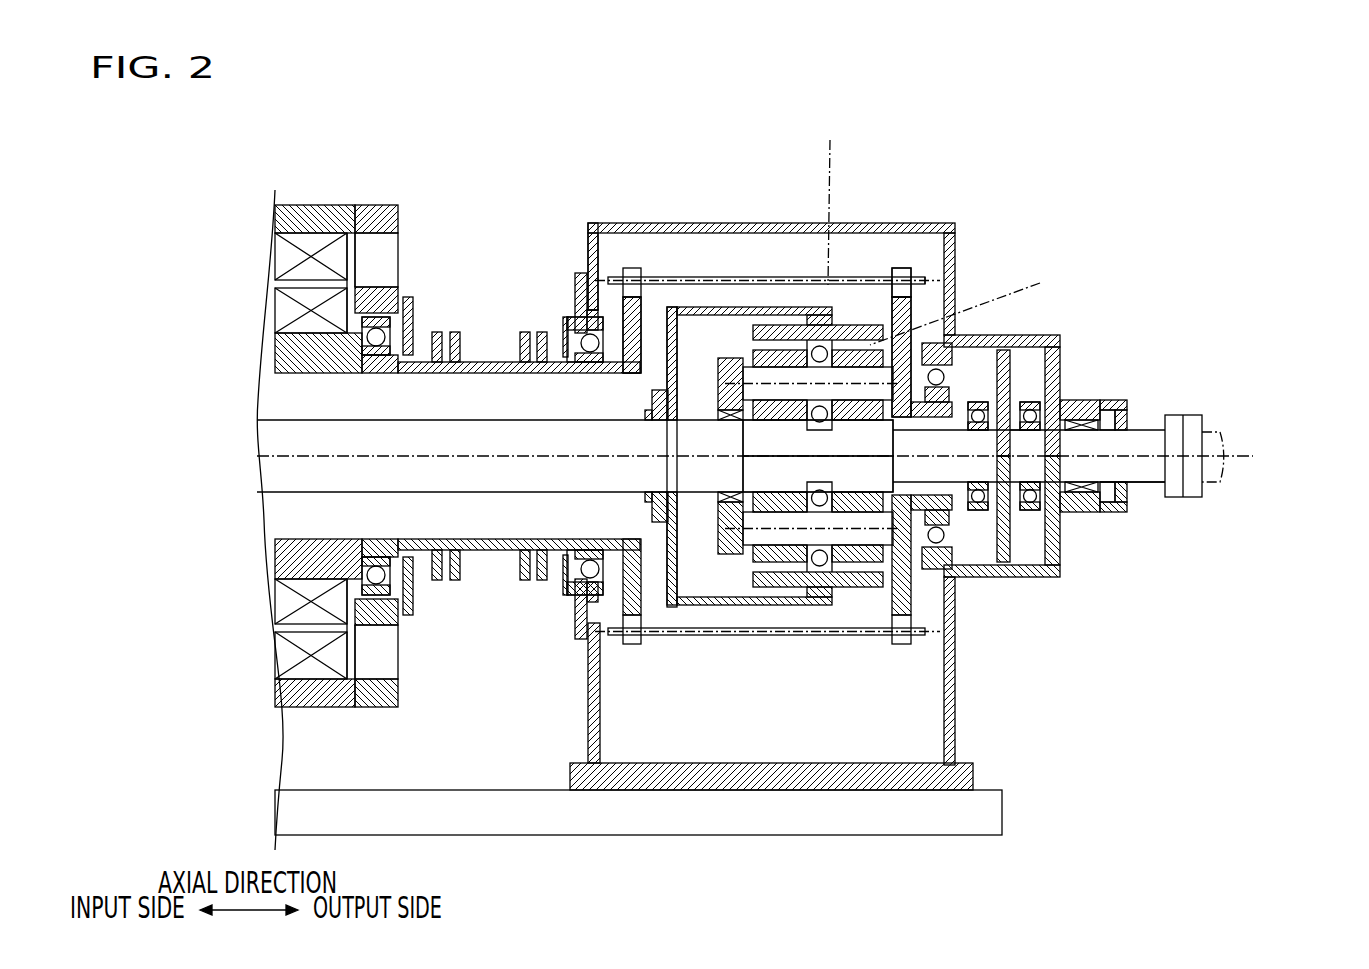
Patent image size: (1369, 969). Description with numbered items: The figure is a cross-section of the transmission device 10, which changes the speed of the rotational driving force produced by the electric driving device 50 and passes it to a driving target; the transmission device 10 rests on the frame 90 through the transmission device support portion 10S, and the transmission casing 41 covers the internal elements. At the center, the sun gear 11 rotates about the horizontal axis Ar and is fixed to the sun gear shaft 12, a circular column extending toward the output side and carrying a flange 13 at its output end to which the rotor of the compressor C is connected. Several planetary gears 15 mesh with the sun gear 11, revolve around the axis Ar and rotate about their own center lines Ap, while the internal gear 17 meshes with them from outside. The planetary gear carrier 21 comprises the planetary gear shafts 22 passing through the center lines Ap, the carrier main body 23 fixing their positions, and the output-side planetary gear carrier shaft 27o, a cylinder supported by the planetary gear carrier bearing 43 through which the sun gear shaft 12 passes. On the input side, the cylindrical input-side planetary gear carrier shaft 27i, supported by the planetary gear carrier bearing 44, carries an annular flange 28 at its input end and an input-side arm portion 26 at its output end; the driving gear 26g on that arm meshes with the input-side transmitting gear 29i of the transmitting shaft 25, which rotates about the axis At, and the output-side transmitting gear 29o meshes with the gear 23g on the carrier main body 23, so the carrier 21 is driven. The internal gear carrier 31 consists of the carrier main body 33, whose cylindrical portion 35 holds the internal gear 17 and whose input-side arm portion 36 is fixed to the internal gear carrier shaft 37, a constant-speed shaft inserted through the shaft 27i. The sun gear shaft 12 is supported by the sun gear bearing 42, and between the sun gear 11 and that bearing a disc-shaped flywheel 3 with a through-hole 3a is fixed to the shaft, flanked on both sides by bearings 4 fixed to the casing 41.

The electric driving device 50 is at (328, 197).
The annular flange 28 is at (527, 332).
The planetary gear carrier bearing 44 is at (585, 330).
The input-side transmitting gear 29i is at (604, 345).
The internal gear carrier shaft 37 is at (610, 480).
The driving gear 26g is at (635, 295).
The input-side arm portion 26 is at (641, 322).
The input-side planetary gear carrier shaft 27i is at (605, 280).
The axis At is at (835, 195).
The transmission device 10 is at (962, 207).
The transmission casing 41 is at (587, 228).
The transmission device support portion 10S is at (948, 720).
The internal gear carrier 31 is at (585, 632).
The cylindrical portion 35 is at (730, 605).
The frame 90 is at (993, 812).
The planetary gear carrier 21 is at (908, 335).
The input-side arm portion 36 is at (667, 560).
The transmitting shaft 25 is at (806, 273).
The planetary gears 15 is at (753, 353).
The planetary gear shaft 22 is at (785, 375).
The internal gear 17 is at (857, 348).
The sun gear 11 is at (860, 475).
The center lines Ap is at (970, 303).
The output-side transmitting gear 29o is at (900, 270).
The carrier main body 23 is at (917, 311).
The gear 23g is at (913, 307).
The output-side planetary gear carrier shaft 27o is at (930, 290).
The planetary gear carrier bearing 43 is at (946, 375).
The sun gear bearing 42 is at (1082, 507).
The flywheel 3 is at (1008, 360).
The through-hole 3a is at (1014, 438).
The sun gear shaft 12 is at (1143, 482).
The bearings 4 is at (1030, 514).
The flange 13 is at (1173, 494).
The compressor C is at (1202, 420).
The axis Ar is at (1237, 450).
The carrier main body 33 is at (740, 880).